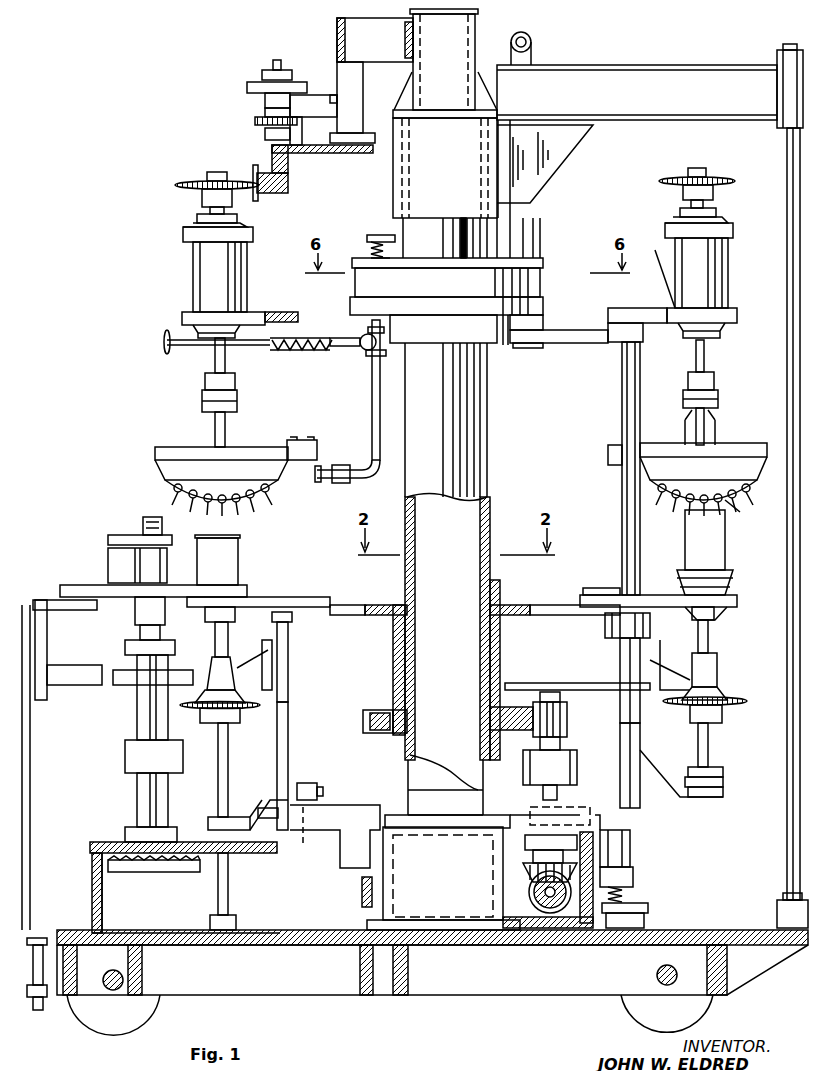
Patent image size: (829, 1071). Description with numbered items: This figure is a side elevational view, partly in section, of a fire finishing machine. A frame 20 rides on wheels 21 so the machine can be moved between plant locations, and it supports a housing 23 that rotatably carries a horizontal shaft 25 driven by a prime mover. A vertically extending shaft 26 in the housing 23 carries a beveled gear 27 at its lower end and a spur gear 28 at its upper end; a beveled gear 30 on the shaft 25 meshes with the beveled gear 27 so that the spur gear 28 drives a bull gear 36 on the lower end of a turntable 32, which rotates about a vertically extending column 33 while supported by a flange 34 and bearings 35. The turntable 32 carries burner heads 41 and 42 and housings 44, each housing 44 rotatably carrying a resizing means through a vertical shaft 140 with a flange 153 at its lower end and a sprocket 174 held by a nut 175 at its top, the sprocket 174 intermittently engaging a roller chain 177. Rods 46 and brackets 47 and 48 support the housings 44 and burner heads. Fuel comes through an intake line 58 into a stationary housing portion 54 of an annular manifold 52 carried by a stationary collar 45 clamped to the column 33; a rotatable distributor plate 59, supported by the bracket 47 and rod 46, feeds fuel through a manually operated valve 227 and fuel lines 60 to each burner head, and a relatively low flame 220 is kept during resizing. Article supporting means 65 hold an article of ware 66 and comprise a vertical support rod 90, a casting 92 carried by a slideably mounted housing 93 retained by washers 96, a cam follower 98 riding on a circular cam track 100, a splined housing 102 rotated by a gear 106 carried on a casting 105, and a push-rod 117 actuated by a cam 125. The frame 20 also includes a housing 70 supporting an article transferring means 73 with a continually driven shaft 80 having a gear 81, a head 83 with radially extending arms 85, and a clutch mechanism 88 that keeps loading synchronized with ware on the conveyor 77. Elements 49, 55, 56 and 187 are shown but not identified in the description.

The frame 20 is at (530, 995).
The wheels 21 is at (640, 1000).
The housing 23 is at (368, 888).
The horizontal shaft 25 is at (540, 896).
The vertically extending shaft 26 is at (550, 692).
The beveled gear 27 is at (525, 870).
The spur gear 28 is at (567, 720).
The beveled gear 30 is at (533, 888).
The turntable 32 is at (500, 660).
The vertically extending column 33 is at (490, 512).
The flange 34 is at (400, 740).
The bearings 35 is at (407, 720).
The bull gear 36 is at (363, 720).
The burner head 41 is at (243, 445).
The burner head 42 is at (728, 443).
The housing 44 is at (230, 285).
The stationary collar 45 is at (493, 340).
The rod 46 is at (622, 375).
The bracket 47 is at (593, 340).
The bracket 48 is at (622, 312).
The fitting 49 is at (305, 440).
The manifold 52 is at (540, 282).
The stationary housing portion 54 is at (543, 262).
The beam 55 is at (590, 65).
The rod 56 is at (787, 165).
The intake line 58 is at (530, 38).
The rotatable distributor plate 59 is at (543, 308).
The fuel line 60 is at (372, 383).
The article supporting means 65 is at (290, 597).
The article of ware 66 is at (238, 545).
The housing 70 is at (95, 885).
The article transferring means 73 is at (135, 535).
The conveyor 77 is at (60, 612).
The vertically extending shaft 80 is at (140, 722).
The gear 81 is at (165, 868).
The head 83 is at (108, 568).
The radially extending arms 85 is at (243, 585).
The clutch mechanism 88 is at (135, 705).
The vertical support rod 90 is at (287, 690).
The casting 92 is at (250, 805).
The slideably mounted housing 93 is at (288, 737).
The washers 96 is at (268, 818).
The cam follower 98 is at (305, 783).
The circular cam track 100 is at (303, 847).
The splined housing 102 is at (228, 755).
The casting 105 is at (215, 660).
The gear 106 is at (190, 708).
The push-rod 117 is at (220, 835).
The cam 125 is at (245, 853).
The vertical shaft 140 is at (225, 360).
The flange 153 is at (237, 395).
The sprocket 174 is at (180, 183).
The nut 175 is at (217, 172).
The roller chain 177 is at (268, 192).
The gear 187 is at (307, 108).
The low flame level 220 is at (740, 512).
The manually operated valve 227 is at (360, 348).